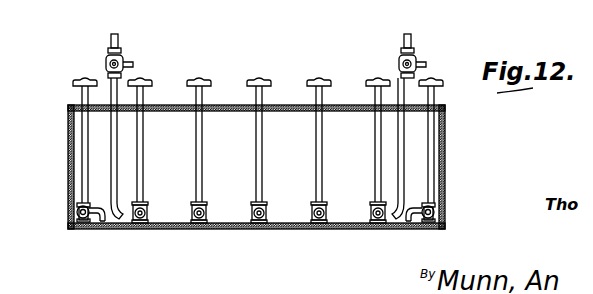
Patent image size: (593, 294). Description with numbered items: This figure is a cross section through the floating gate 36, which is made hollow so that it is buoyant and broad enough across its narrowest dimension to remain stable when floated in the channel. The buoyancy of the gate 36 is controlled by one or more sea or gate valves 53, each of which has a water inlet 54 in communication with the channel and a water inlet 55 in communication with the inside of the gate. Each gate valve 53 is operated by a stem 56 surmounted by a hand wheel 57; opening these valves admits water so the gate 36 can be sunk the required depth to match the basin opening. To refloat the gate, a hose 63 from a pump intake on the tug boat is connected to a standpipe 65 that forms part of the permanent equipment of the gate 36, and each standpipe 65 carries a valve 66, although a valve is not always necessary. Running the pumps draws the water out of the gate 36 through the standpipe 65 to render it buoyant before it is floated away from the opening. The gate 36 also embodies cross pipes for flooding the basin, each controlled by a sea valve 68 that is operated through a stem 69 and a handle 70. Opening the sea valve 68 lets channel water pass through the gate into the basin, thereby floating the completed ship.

The gate 36 is at (283, 105).
The sea or gate valve 53 is at (75, 205).
The water inlet 54 is at (82, 221).
The water inlet 55 is at (98, 223).
The stem 56 is at (82, 125).
The hand wheel 57 is at (78, 78).
The hose 63 is at (115, 33).
The standpipe 65 is at (110, 136).
The valve 66 is at (125, 63).
The sea valve 68 is at (240, 224).
The stem 69 is at (263, 143).
The handle 70 is at (199, 79).